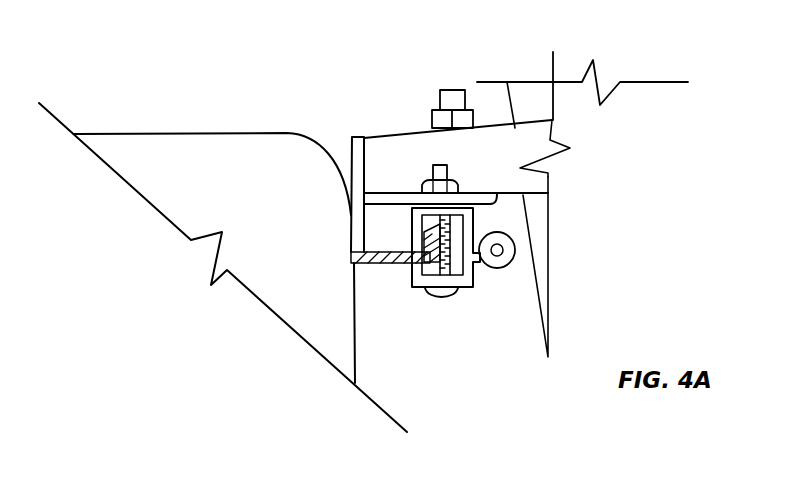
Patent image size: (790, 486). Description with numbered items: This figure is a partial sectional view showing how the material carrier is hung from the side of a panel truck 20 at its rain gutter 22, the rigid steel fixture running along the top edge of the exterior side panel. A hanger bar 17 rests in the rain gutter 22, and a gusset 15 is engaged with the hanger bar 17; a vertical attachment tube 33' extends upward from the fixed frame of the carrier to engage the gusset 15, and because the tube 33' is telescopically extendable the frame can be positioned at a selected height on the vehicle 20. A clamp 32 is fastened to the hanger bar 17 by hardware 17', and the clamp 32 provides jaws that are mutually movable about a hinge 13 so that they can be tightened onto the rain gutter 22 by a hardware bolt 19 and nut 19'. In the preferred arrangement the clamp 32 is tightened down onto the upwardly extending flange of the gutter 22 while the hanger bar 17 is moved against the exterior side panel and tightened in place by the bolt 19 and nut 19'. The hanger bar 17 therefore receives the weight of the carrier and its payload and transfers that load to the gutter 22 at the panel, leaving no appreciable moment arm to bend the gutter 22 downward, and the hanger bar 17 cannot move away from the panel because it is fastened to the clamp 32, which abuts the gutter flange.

The panel truck 20 is at (133, 132).
The hanger bar 17 is at (338, 238).
The rain gutter 22 is at (368, 267).
The gusset 15 is at (412, 142).
The nut 19' is at (452, 77).
The vertical attachment tube 33' is at (582, 82).
The hardware 17' is at (465, 167).
The clamp 32 is at (483, 222).
The hinge 13 is at (513, 265).
The hardware bolt 19 is at (469, 304).